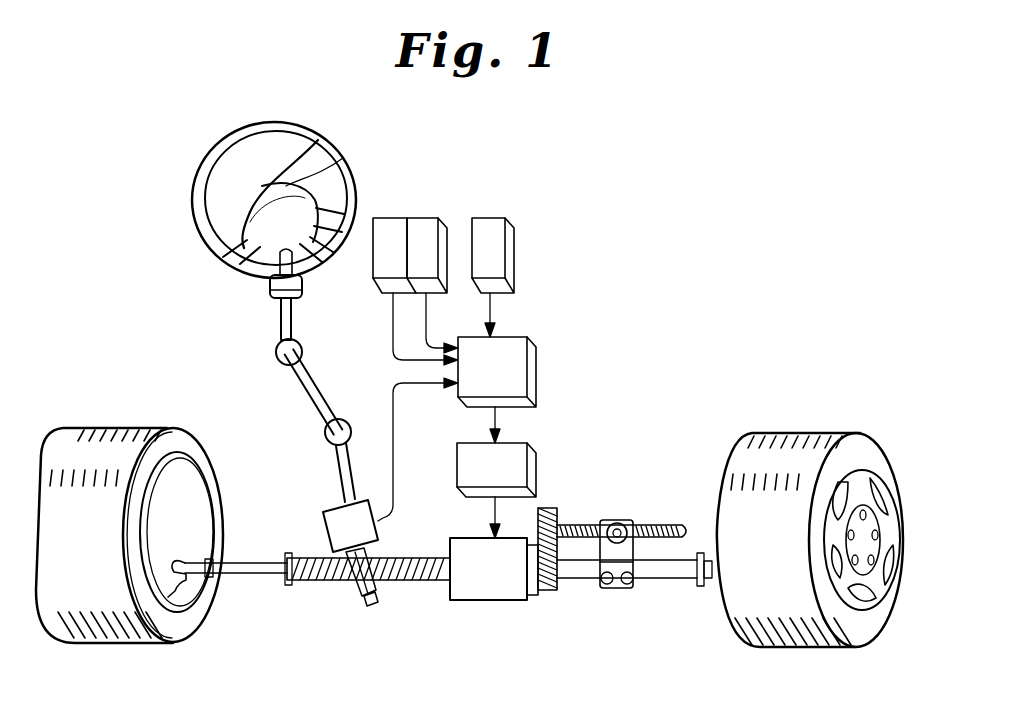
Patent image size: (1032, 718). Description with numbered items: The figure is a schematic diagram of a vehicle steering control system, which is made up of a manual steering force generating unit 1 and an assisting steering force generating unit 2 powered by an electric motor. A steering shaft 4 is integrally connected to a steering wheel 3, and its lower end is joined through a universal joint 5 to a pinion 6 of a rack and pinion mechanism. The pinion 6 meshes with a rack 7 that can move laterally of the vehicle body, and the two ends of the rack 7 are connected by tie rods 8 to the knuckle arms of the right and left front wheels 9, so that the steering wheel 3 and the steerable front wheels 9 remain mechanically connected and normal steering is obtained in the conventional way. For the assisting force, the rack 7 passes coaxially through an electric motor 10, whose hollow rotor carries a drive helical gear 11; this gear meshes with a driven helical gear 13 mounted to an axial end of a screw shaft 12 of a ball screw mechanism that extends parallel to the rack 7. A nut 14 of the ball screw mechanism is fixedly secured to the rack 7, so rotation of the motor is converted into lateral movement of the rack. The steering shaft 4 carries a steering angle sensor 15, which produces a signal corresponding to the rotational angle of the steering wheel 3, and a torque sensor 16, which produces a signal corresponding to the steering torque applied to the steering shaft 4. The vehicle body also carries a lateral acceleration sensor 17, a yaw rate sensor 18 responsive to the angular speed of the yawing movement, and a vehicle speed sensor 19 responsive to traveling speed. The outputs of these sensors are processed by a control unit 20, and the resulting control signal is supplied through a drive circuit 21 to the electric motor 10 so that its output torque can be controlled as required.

The manual steering force generating unit 1 is at (323, 551).
The assisting steering force generating unit 2 is at (626, 510).
The steering wheel 3 is at (193, 197).
The steering shaft 4 is at (292, 320).
The universal joint 5 is at (310, 395).
The pinion 6 is at (357, 588).
The rack 7 is at (405, 582).
The tie rod 8 is at (247, 577).
The front wheel 9 is at (125, 430).
The electric motor 10 is at (493, 601).
The drive helical gear 11 is at (553, 592).
The screw shaft 12 is at (675, 527).
The driven helical gear 13 is at (556, 512).
The nut 14 is at (606, 520).
The steering angle sensor 15 is at (268, 295).
The torque sensor 16 is at (380, 520).
The lateral acceleration sensor 17 is at (386, 218).
The yaw rate sensor 18 is at (428, 218).
The vehicle speed sensor 19 is at (514, 255).
The control unit 20 is at (509, 383).
The drive circuit 21 is at (536, 463).